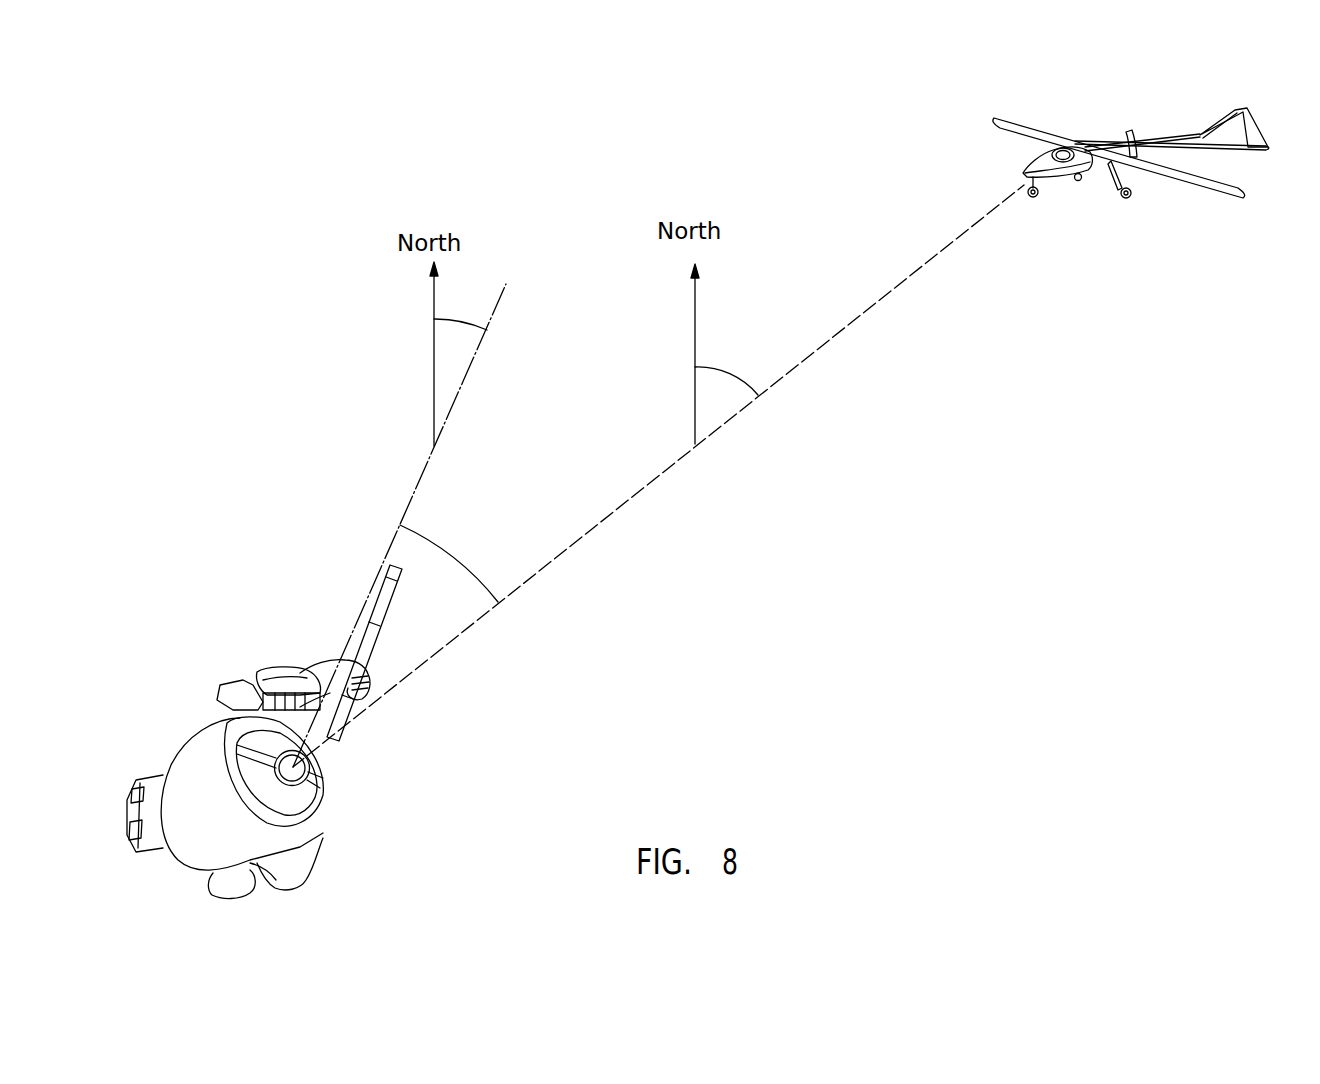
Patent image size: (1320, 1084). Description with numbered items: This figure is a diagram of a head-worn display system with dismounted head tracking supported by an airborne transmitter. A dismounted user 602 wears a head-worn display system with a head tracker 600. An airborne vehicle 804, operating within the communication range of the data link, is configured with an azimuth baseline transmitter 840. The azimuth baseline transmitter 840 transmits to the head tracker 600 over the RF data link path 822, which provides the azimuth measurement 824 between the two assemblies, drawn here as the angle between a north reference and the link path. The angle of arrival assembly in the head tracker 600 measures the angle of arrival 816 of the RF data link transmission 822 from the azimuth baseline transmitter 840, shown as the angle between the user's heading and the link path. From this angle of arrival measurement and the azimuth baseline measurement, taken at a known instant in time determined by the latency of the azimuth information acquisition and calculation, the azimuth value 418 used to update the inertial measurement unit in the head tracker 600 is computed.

The airborne vehicle 804 is at (997, 120).
The azimuth baseline transmitter 840 is at (1062, 160).
The RF data link path 822 is at (872, 305).
The azimuth measurement 824 is at (731, 371).
The azimuth value 418 is at (465, 320).
The angle of arrival 816 is at (473, 565).
The user 602 is at (232, 682).
The head tracker 600 is at (297, 767).